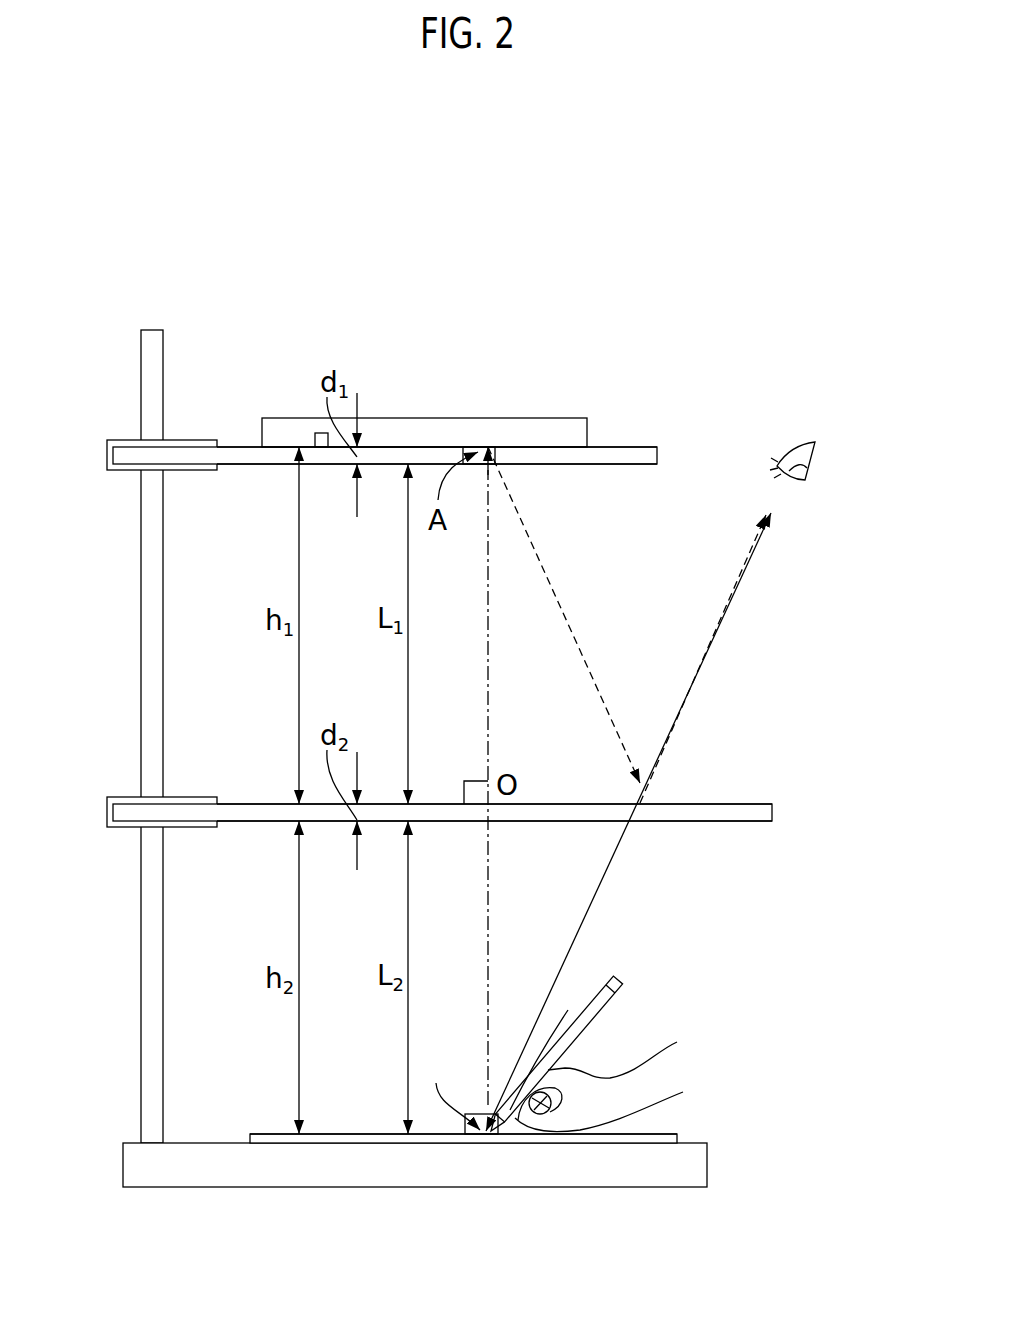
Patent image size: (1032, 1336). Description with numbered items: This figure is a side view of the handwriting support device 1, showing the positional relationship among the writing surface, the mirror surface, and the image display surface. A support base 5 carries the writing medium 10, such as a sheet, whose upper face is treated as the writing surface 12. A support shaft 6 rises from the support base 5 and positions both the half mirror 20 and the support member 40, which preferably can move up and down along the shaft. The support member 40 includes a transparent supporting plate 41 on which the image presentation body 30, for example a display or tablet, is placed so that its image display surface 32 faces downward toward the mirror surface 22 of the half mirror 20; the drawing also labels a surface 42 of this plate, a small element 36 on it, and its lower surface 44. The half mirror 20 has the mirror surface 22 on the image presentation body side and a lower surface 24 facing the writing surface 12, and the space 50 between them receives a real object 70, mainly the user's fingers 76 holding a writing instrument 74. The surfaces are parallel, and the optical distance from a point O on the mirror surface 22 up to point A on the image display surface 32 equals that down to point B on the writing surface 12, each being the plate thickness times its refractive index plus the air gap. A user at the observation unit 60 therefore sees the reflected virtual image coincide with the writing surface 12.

The handwriting support device 1 is at (403, 744).
The support base 5 is at (700, 1160).
The support shaft 6 is at (152, 352).
The writing medium 10 is at (499, 1098).
The writing surface 12 is at (662, 1130).
The half mirror 20 is at (478, 815).
The mirror surface 22 is at (712, 800).
The lower surface 24 is at (712, 825).
The image presentation body 30 is at (427, 418).
The image display surface 32 is at (560, 452).
The camera 36 is at (318, 432).
The support member 40 is at (395, 429).
The supporting plate 41 is at (243, 457).
The upper surface of second plate 42 is at (637, 445).
The lower surface 44 is at (640, 468).
The working space 50 is at (365, 1108).
The observation unit 60 is at (826, 455).
The real object 70 is at (598, 992).
The writing instrument 74 is at (620, 970).
The user's fingers 76 is at (596, 1019).